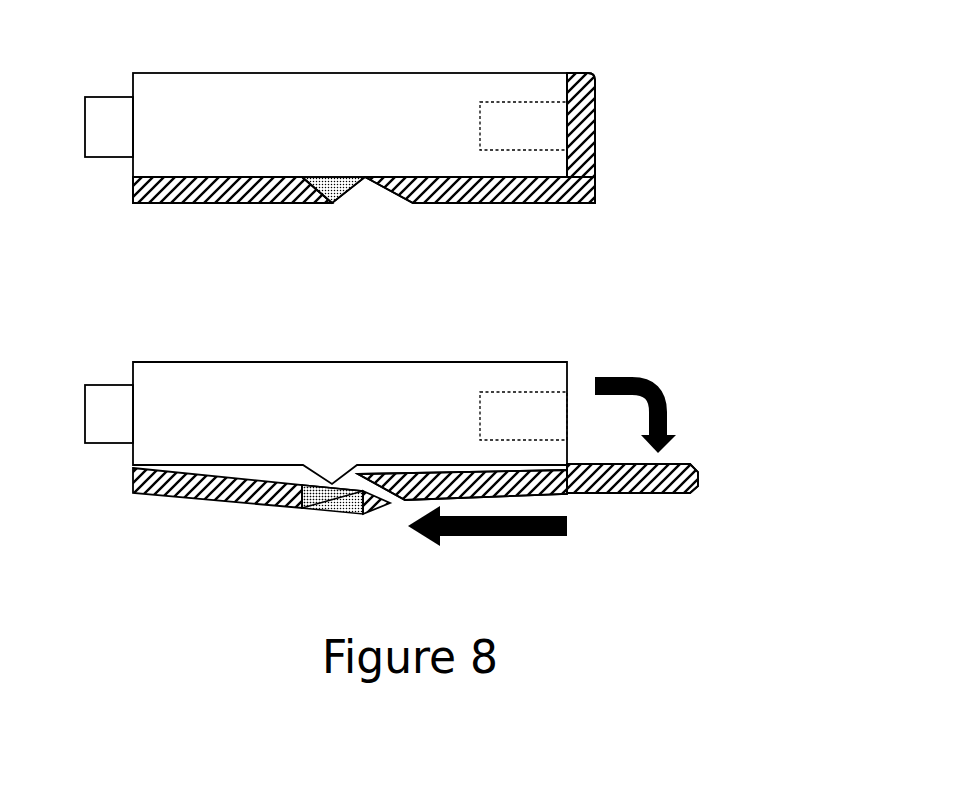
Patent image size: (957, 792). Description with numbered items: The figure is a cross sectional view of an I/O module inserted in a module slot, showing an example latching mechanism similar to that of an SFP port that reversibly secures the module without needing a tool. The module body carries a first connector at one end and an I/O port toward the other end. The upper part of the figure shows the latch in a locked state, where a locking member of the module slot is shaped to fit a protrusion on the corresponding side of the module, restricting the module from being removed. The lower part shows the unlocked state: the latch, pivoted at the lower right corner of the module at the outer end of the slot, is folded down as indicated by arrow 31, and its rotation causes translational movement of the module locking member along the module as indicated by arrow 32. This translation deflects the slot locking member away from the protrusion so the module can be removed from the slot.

The arrow 31 is at (672, 397).
The arrow 32 is at (513, 536).